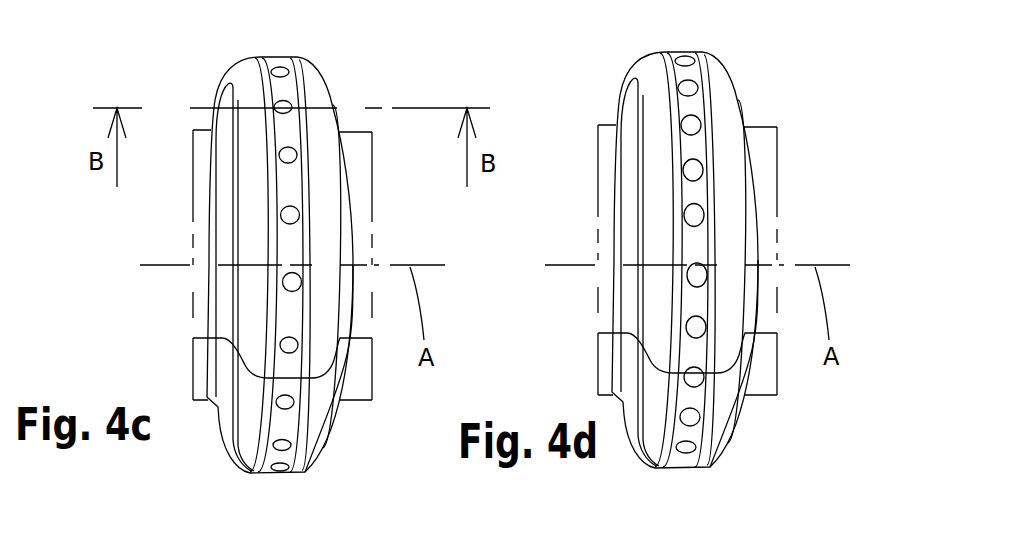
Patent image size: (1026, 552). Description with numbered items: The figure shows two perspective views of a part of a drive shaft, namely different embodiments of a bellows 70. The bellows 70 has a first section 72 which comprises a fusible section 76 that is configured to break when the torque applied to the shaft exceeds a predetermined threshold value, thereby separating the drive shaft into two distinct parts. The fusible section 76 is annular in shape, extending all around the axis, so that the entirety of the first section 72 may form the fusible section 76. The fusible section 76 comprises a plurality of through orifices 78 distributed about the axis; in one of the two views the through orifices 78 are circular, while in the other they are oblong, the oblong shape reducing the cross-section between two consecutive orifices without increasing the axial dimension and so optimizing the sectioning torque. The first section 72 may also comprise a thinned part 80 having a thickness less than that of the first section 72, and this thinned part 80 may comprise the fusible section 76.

In FIG. 4C, the bellows 70 is at (419, 85).
In FIG. 4D, the bellows 70 is at (825, 85).
In FIG. 4C, the first section 72 is at (318, 87).
In FIG. 4D, the first section 72 is at (723, 87).
In FIG. 4C, the fusible section 76 is at (238, 44).
In FIG. 4D, the fusible section 76 is at (641, 36).
In FIG. 4C, the through orifices 78 is at (300, 218).
In FIG. 4D, the through orifices 78 is at (705, 218).
In FIG. 4C, the thinned part 80 is at (314, 190).
In FIG. 4D, the thinned part 80 is at (717, 188).